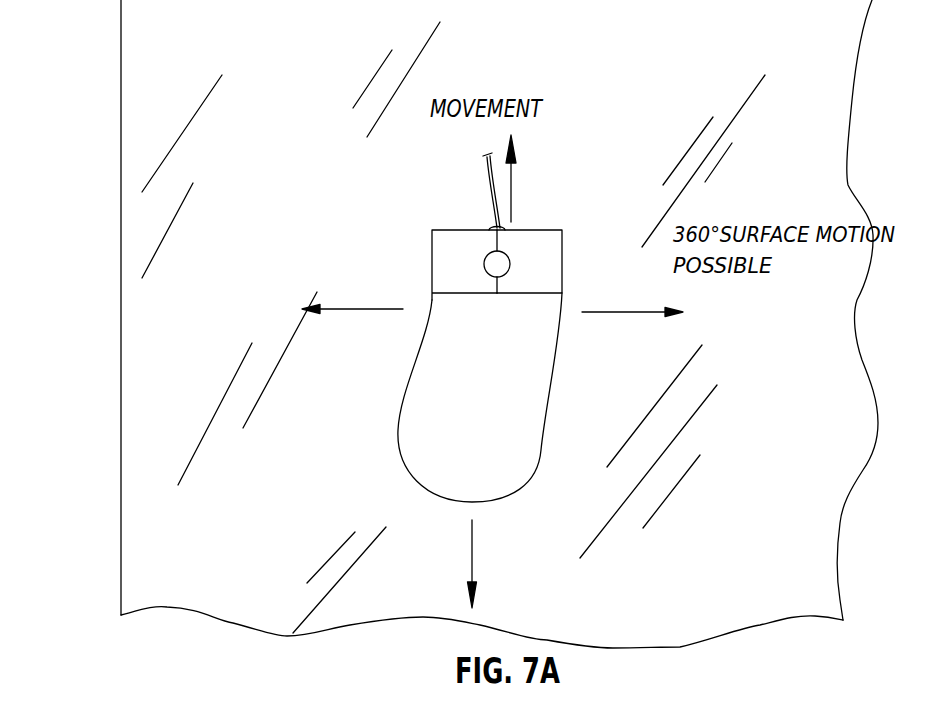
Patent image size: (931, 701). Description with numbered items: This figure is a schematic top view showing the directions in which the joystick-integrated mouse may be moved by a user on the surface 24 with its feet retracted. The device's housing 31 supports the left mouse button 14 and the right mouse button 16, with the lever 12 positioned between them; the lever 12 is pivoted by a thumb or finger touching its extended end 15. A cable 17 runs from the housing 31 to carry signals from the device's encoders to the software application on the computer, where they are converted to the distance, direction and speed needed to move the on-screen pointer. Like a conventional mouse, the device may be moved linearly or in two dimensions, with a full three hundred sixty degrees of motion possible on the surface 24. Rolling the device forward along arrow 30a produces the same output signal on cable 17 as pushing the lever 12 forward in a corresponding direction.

The lever 12 is at (561, 230).
The left mouse button 14 is at (445, 243).
The extended end 15 is at (511, 264).
The right mouse button 16 is at (542, 247).
The cable 17 is at (490, 173).
The surface 24 is at (132, 403).
The arrow 30a is at (512, 179).
The housing 31 is at (497, 448).